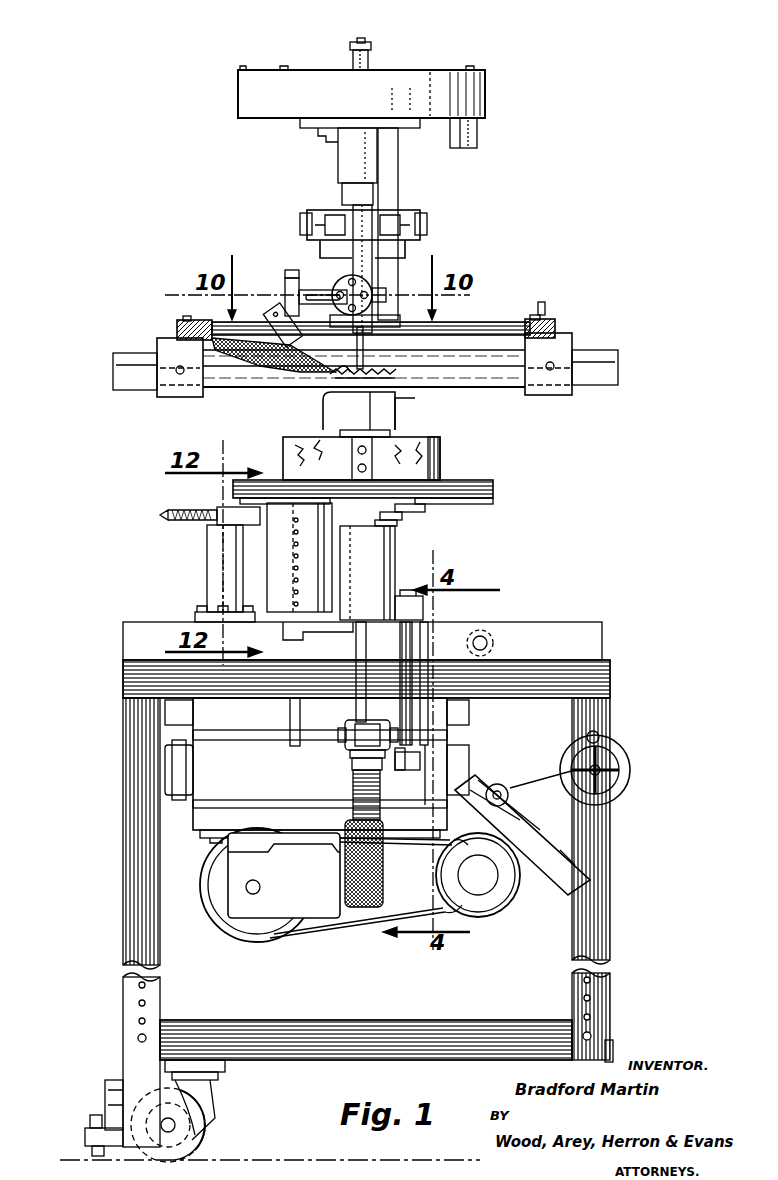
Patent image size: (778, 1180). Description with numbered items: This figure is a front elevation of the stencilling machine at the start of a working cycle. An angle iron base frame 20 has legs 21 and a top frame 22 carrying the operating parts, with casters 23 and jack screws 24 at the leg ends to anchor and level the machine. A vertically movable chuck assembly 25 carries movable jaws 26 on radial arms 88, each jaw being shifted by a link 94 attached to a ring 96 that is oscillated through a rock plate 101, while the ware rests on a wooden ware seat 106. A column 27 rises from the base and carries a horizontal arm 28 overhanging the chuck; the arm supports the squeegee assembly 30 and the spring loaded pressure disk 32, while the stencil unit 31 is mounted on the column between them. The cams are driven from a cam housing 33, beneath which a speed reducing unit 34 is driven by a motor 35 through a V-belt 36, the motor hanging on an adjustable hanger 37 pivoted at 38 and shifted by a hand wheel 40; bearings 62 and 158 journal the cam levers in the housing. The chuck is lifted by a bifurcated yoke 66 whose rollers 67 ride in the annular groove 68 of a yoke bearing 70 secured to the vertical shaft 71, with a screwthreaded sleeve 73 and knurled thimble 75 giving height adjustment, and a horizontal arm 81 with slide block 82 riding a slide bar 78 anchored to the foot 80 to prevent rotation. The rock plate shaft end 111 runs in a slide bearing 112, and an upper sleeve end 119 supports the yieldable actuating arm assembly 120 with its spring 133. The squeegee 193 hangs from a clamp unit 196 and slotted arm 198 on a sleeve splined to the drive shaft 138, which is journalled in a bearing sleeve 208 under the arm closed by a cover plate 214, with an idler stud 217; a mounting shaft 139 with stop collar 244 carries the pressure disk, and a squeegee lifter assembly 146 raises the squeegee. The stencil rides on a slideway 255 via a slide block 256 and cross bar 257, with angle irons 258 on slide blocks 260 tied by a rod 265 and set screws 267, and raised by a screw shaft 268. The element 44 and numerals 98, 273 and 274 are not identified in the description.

The base frame 20 is at (612, 848).
The legs 21 is at (610, 884).
The top frame 22 is at (598, 672).
The casters 23 is at (200, 1092).
The jack screws 24 is at (95, 1115).
The chuck assembly 25 is at (497, 486).
The movable jaws 26 is at (348, 460).
The column 27 is at (400, 174).
The horizontal arm 28 is at (470, 90).
The squeegee assembly 30 is at (352, 267).
The stencil unit 31 is at (480, 320).
The pressure disk 32 is at (388, 366).
The cam housing 33 is at (200, 735).
The speed reducing unit 34 is at (312, 912).
The motor 35 is at (496, 900).
The V-belt 36 is at (368, 918).
The adjustable hanger 37 is at (540, 840).
The pivot 38 is at (490, 643).
The hand wheel 40 is at (622, 750).
The gear housing 44 is at (200, 820).
The bearings 62 is at (185, 710).
The bifurcated yoke 66 is at (344, 735).
The rollers 67 is at (350, 730).
The annular groove 68 is at (355, 754).
The yoke bearing 70 is at (352, 762).
The vertical shaft 71 is at (360, 645).
The screwthreaded sleeve 73 is at (356, 797).
The knurled thimble 75 is at (384, 870).
The slide bar 78 is at (410, 640).
The foot 80 is at (378, 564).
The horizontal arm 81 is at (400, 752).
The slide block 82 is at (410, 762).
The radial arm 88 is at (250, 482).
The link 94 is at (430, 504).
The ring 96 is at (404, 514).
The collar 98 is at (395, 524).
The rock plate 101 is at (275, 557).
The ware seat 106 is at (440, 459).
The lower shaft end 111 is at (292, 718).
The slide bearing 112 is at (288, 632).
The upper end of sleeve 119 is at (212, 570).
The yieldable actuating arm assembly 120 is at (238, 516).
The spring 133 is at (200, 512).
The vertical shaft 138 is at (369, 57).
The mounting shaft 139 is at (367, 40).
The squeegee lifter assembly 146 is at (416, 238).
The bearings 158 is at (188, 763).
The squeegee 193 is at (290, 330).
The clamp unit 196 is at (290, 300).
The slotted arm 198 is at (288, 290).
The bearing sleeve 208 is at (348, 158).
The cover plate 214 is at (428, 72).
The stud 217 is at (478, 132).
The stop collar 244 is at (354, 46).
The slideway 255 is at (398, 430).
The slide block 256 is at (405, 401).
The cross bar 257 is at (120, 382).
The angle irons 258 is at (178, 326).
The slide blocks 260 is at (160, 345).
The rod 265 is at (490, 375).
The set screws 267 is at (180, 375).
The screw shaft 268 is at (328, 409).
The screw 273 is at (195, 320).
The nut 274 is at (545, 305).